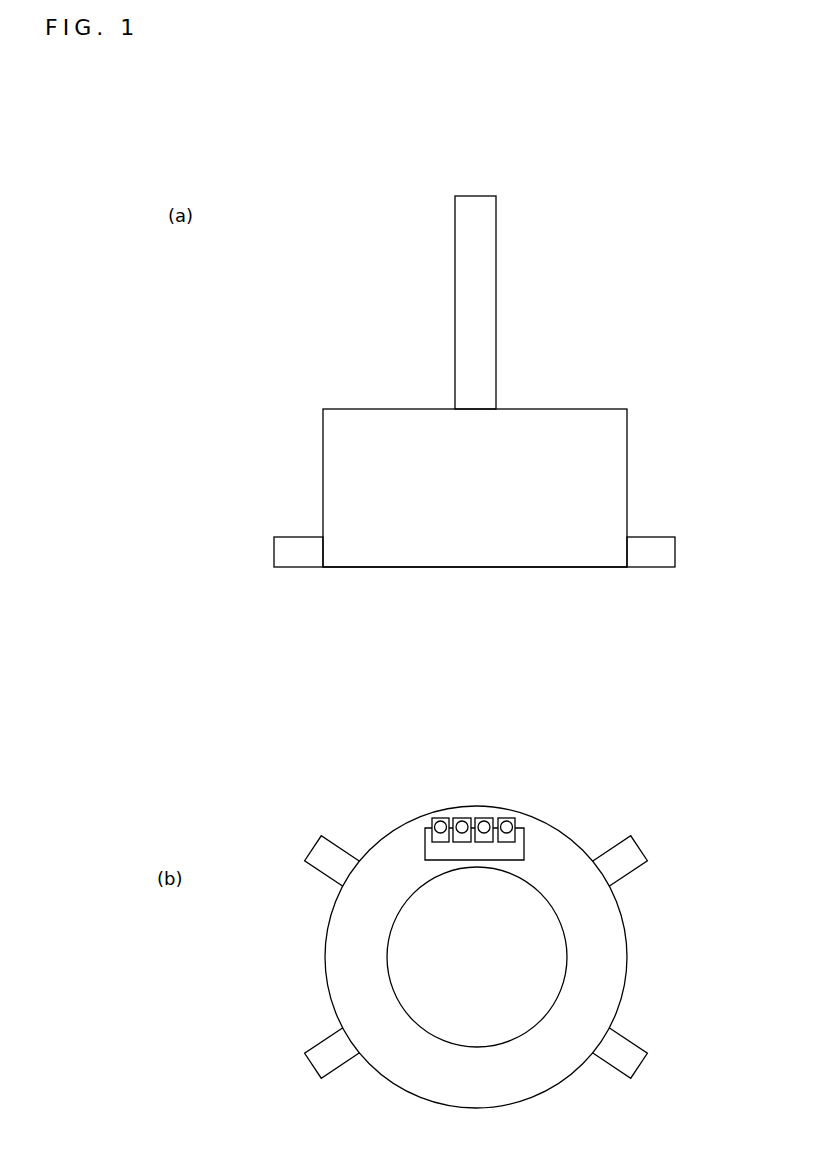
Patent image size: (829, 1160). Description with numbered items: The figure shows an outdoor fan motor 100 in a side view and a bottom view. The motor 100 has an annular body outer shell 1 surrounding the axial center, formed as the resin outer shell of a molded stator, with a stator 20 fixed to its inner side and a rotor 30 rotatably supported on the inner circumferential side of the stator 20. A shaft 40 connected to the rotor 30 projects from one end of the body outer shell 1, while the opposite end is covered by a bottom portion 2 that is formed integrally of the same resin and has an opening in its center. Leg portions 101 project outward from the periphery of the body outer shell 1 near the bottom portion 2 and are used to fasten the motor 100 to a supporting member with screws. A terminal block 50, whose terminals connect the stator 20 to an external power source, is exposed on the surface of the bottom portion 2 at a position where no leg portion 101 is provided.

The motor 100 is at (357, 353).
The shaft 40 is at (497, 226).
The body outer shell 1 is at (627, 446).
The bottom portion 2 is at (472, 568).
The stator 20 is at (674, 520).
The rotor 30 is at (600, 495).
The leg portion 101 is at (650, 568).
The terminal block 50 is at (524, 828).